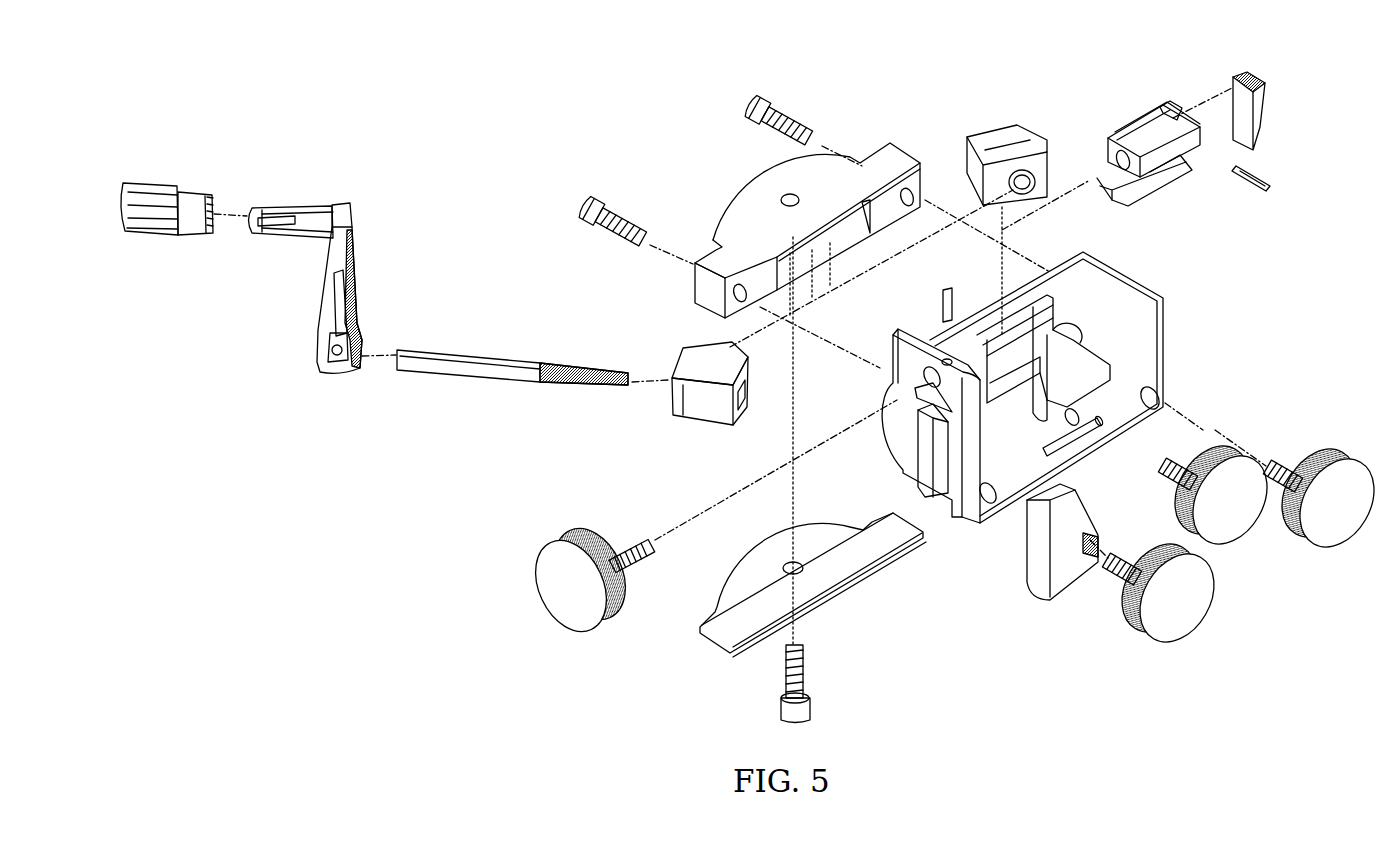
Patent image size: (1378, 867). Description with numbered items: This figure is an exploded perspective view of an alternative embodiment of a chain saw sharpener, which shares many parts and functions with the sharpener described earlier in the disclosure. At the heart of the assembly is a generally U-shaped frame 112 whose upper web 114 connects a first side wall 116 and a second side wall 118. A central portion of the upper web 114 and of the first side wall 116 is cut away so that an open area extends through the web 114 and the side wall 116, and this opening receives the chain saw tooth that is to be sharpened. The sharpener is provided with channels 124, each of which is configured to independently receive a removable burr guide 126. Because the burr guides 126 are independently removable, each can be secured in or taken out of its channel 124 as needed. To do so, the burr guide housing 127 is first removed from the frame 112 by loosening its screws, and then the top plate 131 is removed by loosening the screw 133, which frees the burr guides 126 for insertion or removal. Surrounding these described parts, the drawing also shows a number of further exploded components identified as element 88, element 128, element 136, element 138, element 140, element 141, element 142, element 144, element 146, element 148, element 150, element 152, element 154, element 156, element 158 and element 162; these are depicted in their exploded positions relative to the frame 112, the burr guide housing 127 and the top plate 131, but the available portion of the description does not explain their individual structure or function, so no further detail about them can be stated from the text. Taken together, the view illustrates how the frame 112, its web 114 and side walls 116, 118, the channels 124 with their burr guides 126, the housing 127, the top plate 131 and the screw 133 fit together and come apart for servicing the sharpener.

The thumb screw 88 is at (588, 580).
The frame 112 is at (1046, 413).
The upper web 114 is at (1046, 387).
The first side wall 116 is at (1020, 414).
The second side wall 118 is at (917, 465).
The channels 124 is at (588, 196).
The removable burr guide 126 is at (697, 427).
The burr guide housing 127 is at (907, 110).
The block 128 is at (1031, 136).
The top plate 131 is at (730, 657).
The screw 133 is at (811, 702).
The bore 136 is at (1037, 153).
The thumb screw 138 is at (1220, 495).
The thumb screws 140 is at (1240, 545).
The bracket 141 is at (1037, 598).
The holes 142 is at (1162, 382).
The lever assembly 144 is at (415, 263).
The knurled portion of bar 146 is at (577, 387).
The bar 148 is at (512, 397).
The lever 150 is at (348, 207).
The knob 152 is at (186, 186).
The slide block 154 is at (1118, 97).
The slide block body 156 is at (1134, 124).
The key 158 is at (1258, 73).
The slide base plate 162 is at (1160, 190).